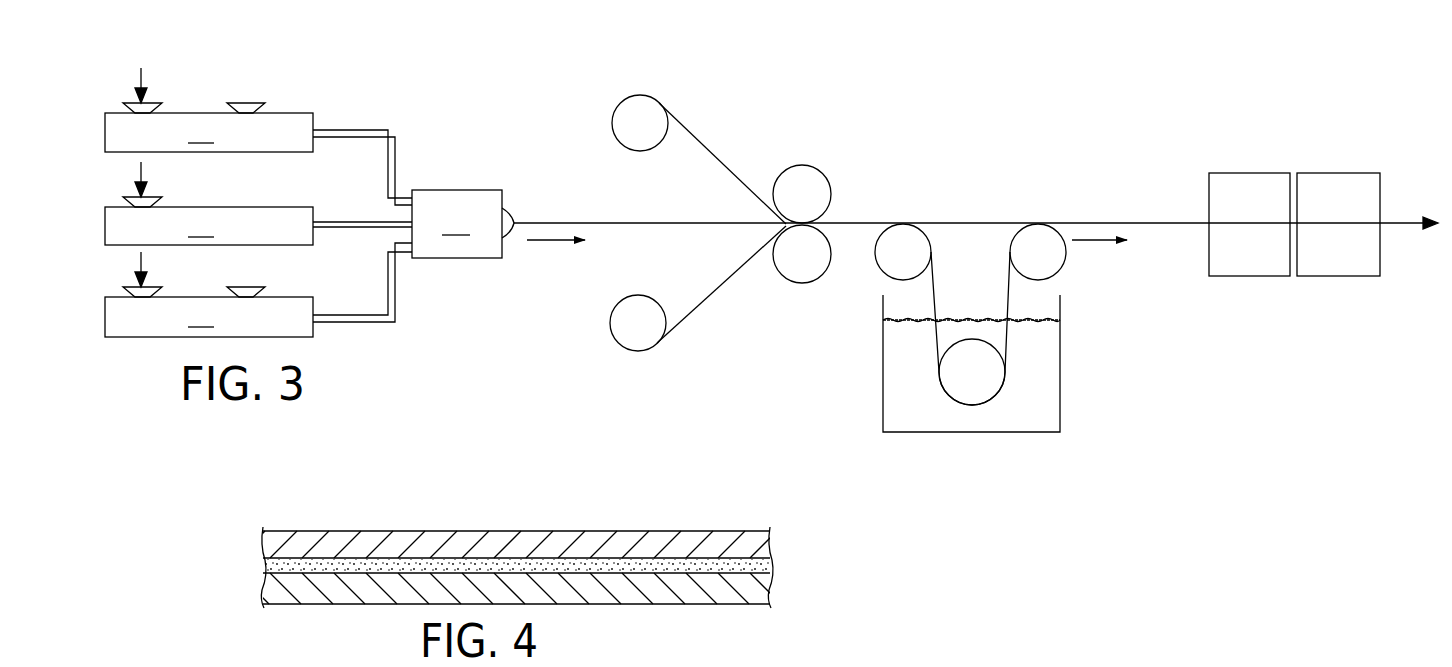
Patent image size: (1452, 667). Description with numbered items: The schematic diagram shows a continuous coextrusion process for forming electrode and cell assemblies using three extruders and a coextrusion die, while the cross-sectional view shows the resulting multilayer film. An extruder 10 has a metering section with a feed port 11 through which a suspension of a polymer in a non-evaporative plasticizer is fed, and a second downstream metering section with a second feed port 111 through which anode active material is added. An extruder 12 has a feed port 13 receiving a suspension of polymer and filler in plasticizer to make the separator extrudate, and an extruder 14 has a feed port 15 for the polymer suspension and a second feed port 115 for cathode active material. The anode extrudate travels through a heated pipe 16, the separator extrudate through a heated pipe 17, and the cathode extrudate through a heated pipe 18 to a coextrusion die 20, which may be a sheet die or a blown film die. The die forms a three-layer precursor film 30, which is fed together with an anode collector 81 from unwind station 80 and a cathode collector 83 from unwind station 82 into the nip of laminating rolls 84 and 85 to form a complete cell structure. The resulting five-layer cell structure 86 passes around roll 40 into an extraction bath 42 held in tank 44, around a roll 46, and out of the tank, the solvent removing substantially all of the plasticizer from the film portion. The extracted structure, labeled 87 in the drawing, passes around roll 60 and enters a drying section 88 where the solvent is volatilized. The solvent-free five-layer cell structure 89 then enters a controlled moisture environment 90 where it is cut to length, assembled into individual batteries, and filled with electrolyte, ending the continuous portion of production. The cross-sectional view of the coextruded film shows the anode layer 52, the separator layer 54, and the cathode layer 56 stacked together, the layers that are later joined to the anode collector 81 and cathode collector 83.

In FIG. 3, the extruder 10 is at (209, 132).
In FIG. 3, the feed port 11 is at (157, 103).
In FIG. 3, the second feed port 111 is at (248, 103).
In FIG. 3, the extruder 12 is at (209, 226).
In FIG. 3, the feed port 13 is at (157, 197).
In FIG. 3, the extruder 14 is at (209, 317).
In FIG. 3, the feed port 15 is at (157, 287).
In FIG. 3, the second feed port 115 is at (248, 287).
In FIG. 3, the heated pipe 16 is at (357, 128).
In FIG. 3, the heated pipe 17 is at (345, 220).
In FIG. 3, the heated pipe 18 is at (343, 313).
In FIG. 3, the coextrusion die 20 is at (463, 224).
In FIG. 3, the three-layer precursor film 30 is at (543, 222).
In FIG. 4, the three-layer precursor film 30 is at (650, 519).
In FIG. 3, the unwind station 80 is at (613, 115).
In FIG. 3, the anode collector 81 is at (708, 145).
In FIG. 3, the unwind station 82 is at (617, 345).
In FIG. 3, the cathode collector 83 is at (696, 311).
In FIG. 3, the laminating roll 84 is at (805, 165).
In FIG. 3, the laminating roll 85 is at (782, 283).
In FIG. 3, the five-layer cell structure 86 is at (863, 222).
In FIG. 3, the roll 40 is at (878, 267).
In FIG. 3, the extraction bath 42 is at (1040, 363).
In FIG. 3, the tank 44 is at (1060, 408).
In FIG. 3, the roll 46 is at (992, 395).
In FIG. 3, the roll 60 is at (1068, 257).
In FIG. 3, the treated web 87 is at (1090, 222).
In FIG. 3, the drying section 88 is at (1245, 172).
In FIG. 3, the solvent-free five-layer cell structure 89 is at (1310, 226).
In FIG. 3, the controlled moisture environment 90 is at (1330, 172).
In FIG. 4, the anode layer 52 is at (760, 545).
In FIG. 4, the separator layer 54 is at (765, 566).
In FIG. 4, the cathode layer 56 is at (760, 590).